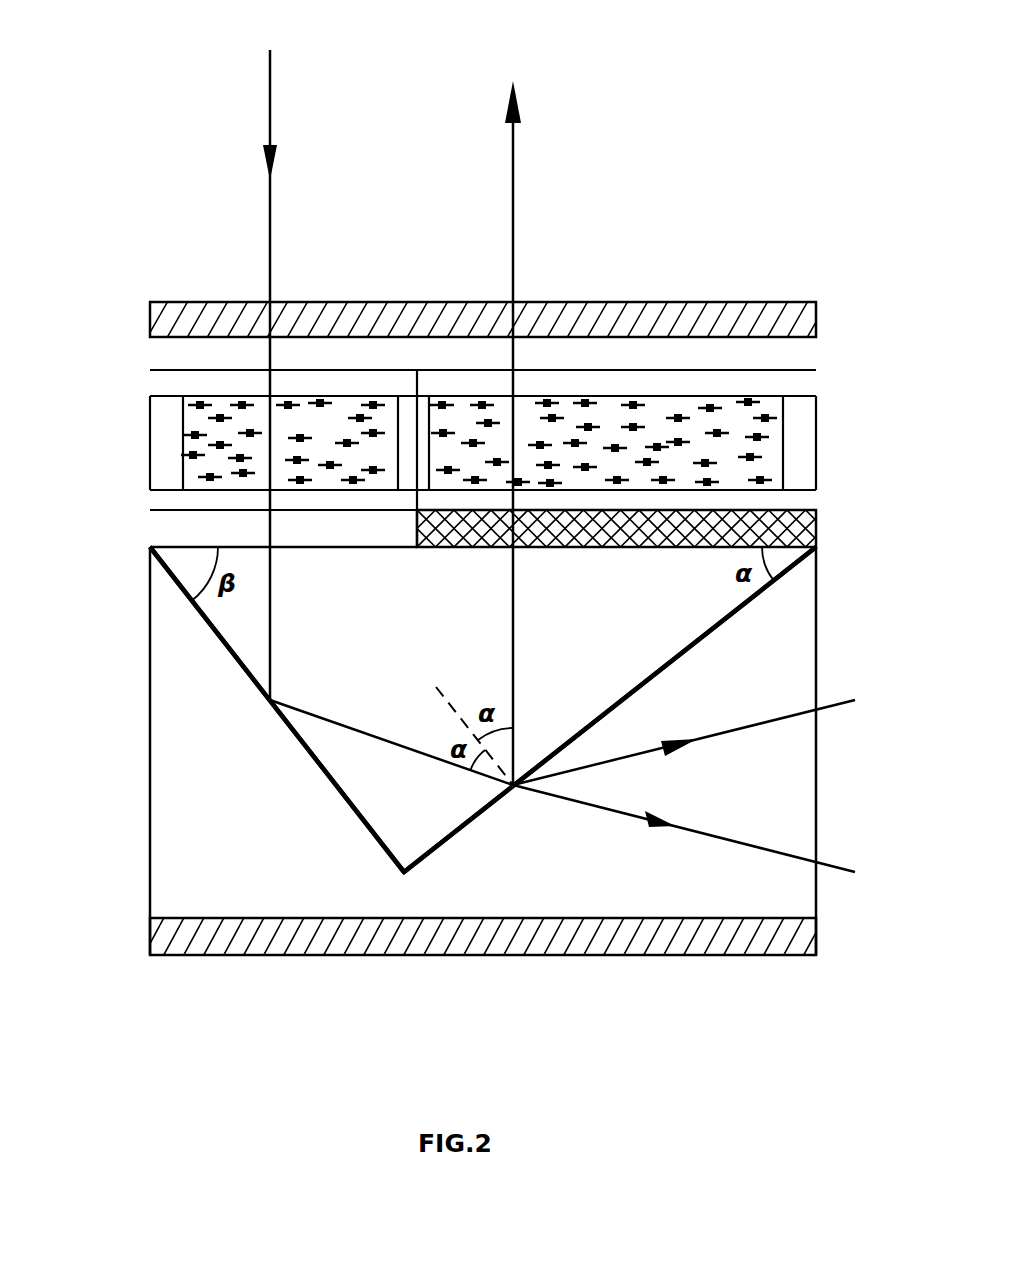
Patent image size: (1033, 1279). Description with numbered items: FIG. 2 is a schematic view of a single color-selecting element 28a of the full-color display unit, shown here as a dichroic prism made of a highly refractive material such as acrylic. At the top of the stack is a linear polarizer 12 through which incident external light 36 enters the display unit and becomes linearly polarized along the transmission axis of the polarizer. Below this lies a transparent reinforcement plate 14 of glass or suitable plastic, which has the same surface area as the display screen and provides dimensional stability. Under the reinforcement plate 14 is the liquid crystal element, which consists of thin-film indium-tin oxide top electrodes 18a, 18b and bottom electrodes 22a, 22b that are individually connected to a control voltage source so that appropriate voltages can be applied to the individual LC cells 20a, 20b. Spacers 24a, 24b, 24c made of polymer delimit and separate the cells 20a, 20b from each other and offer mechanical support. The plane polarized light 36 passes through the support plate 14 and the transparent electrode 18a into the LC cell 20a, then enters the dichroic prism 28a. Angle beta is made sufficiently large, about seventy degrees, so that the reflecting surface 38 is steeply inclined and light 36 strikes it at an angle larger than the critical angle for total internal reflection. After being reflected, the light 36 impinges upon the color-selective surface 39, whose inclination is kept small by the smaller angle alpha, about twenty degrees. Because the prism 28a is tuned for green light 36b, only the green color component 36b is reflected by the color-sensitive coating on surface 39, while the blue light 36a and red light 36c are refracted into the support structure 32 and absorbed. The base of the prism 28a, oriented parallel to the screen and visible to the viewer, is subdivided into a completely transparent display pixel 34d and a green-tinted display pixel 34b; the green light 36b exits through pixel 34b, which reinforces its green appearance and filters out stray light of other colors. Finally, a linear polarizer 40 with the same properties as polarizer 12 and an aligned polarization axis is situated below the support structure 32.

The polarizer 12 is at (755, 327).
The reinforcement plate 14 is at (195, 358).
The top electrode 18a is at (192, 387).
The top electrode 18b is at (777, 383).
The LC cell 20a is at (337, 443).
The LC cell 20b is at (657, 447).
The bottom electrode 22a is at (192, 500).
The bottom electrode 22b is at (777, 498).
The spacer 24a is at (167, 443).
The spacer 24b is at (420, 412).
The spacer 24c is at (797, 443).
The color-selecting element 28a is at (607, 575).
The support structure 32 is at (260, 843).
The display pixel 34b is at (737, 520).
The display pixel 34d is at (230, 522).
The light 36 is at (381, 402).
The blue color light 36a is at (713, 737).
The green color light 36b is at (518, 420).
The red color light 36c is at (712, 836).
The reflecting surface 38 is at (297, 737).
The color-selective surface 39 is at (770, 590).
The linear polarizer 40 is at (272, 938).